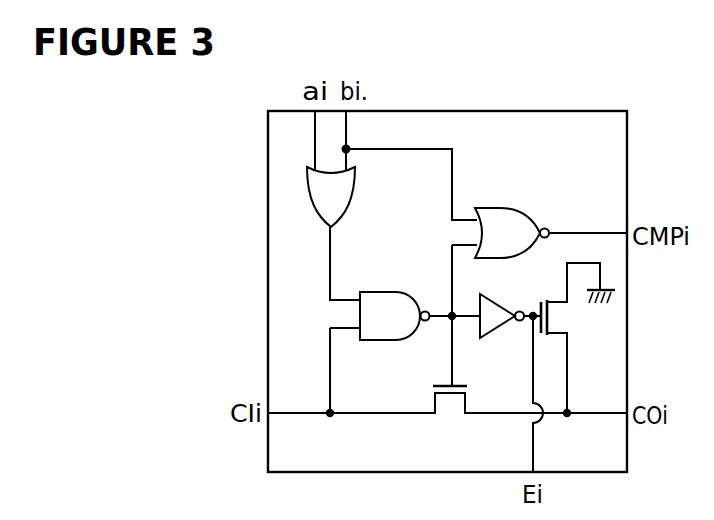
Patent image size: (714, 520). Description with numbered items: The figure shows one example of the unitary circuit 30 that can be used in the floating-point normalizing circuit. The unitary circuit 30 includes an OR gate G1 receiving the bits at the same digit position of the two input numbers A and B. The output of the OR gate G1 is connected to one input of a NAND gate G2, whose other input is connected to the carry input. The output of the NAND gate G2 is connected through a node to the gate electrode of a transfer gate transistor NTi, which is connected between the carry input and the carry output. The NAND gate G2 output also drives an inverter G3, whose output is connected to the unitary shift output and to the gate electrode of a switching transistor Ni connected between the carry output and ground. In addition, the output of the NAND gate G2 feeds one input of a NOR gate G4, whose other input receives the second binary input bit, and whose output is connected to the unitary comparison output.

The unitary circuit 30 is at (548, 111).
The OR gate G1 is at (333, 233).
The NAND gate G2 is at (405, 352).
The inverter G3 is at (510, 309).
The NOR gate G4 is at (551, 233).
The switching transistor Ni is at (573, 367).
The transfer gate transistor NTi is at (447, 416).